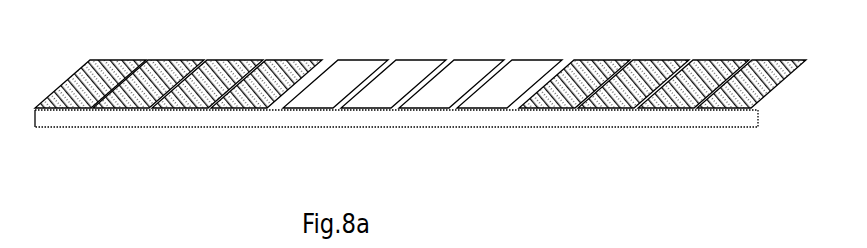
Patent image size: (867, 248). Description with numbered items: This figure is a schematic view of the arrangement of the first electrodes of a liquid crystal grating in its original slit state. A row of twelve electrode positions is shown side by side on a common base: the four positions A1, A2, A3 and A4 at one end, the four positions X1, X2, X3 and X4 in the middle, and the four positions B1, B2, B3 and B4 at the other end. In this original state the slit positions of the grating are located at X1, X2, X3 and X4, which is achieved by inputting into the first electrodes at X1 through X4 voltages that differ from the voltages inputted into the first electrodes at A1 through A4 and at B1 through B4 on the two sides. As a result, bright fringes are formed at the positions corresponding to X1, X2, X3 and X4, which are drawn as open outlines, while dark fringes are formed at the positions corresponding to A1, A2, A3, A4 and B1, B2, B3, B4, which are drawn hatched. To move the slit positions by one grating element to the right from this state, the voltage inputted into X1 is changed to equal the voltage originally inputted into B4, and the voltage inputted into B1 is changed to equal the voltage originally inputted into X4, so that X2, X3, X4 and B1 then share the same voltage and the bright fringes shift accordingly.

The first electrode position A1 is at (90, 73).
The first electrode position A2 is at (148, 73).
The first electrode position A3 is at (207, 73).
The first electrode position A4 is at (266, 73).
The original slit position X1 is at (335, 73).
The original slit position X2 is at (393, 73).
The original slit position X3 is at (451, 73).
The original slit position X4 is at (509, 73).
The first electrode position B1 is at (574, 73).
The first electrode position B2 is at (633, 73).
The first electrode position B3 is at (693, 73).
The first electrode position B4 is at (751, 73).